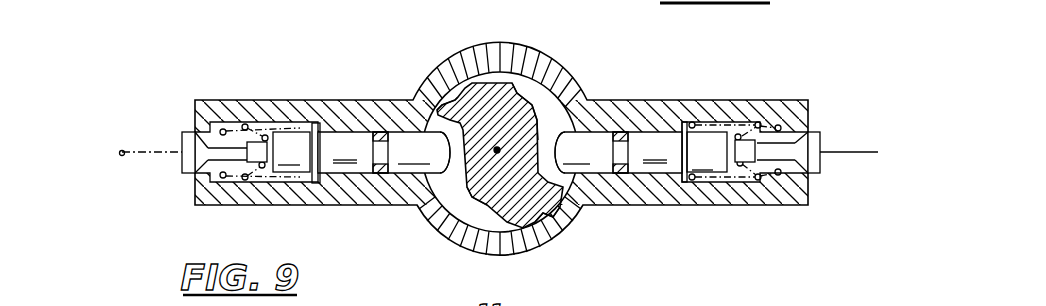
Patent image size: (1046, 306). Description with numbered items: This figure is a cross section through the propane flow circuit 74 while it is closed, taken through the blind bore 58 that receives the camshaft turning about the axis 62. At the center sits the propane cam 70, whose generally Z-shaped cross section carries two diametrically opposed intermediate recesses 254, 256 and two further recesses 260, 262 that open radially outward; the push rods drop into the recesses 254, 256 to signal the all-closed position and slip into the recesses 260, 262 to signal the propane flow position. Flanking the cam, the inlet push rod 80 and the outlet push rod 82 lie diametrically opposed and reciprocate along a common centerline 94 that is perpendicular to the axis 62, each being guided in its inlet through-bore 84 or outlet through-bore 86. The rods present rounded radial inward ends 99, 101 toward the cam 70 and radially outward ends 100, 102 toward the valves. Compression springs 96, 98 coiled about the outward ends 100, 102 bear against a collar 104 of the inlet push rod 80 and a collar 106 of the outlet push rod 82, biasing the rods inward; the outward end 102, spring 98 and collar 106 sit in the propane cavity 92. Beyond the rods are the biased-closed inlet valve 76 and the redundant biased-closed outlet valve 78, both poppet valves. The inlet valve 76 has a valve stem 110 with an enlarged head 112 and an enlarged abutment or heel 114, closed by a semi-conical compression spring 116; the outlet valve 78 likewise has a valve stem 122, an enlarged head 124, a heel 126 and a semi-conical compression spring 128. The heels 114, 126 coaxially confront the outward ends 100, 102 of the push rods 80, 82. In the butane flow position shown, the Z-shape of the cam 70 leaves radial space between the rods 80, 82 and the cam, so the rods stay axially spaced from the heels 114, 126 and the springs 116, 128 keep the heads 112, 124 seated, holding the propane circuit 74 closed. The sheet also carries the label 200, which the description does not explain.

The blind bore 58 is at (497, 150).
The axis 62 is at (499, 78).
The propane cam 70 is at (515, 93).
The propane flow circuit 74 is at (668, 73).
The inlet valve 76 is at (807, 160).
The outlet valve 78 is at (183, 131).
The inlet push rod 80 is at (618, 152).
The outlet push rod 82 is at (384, 152).
The inlet through-bore 84 is at (592, 165).
The outlet through-bore 86 is at (398, 140).
The propane cavity 92 is at (285, 125).
The centerline 94 is at (121, 150).
The compression spring 96 is at (720, 155).
The compression spring 98 is at (309, 152).
The rounded radial inward end 99 is at (568, 143).
The radially outward end 100 is at (710, 155).
The rounded radial inward end 101 is at (430, 150).
The radially outward end 102 is at (292, 127).
The collar 104 is at (693, 152).
The collar 106 is at (292, 168).
The valve stem 110 is at (780, 150).
The enlarged head 112 is at (818, 142).
The enlarged abutment 114 is at (745, 160).
The semi-conical compression spring 116 is at (772, 124).
The valve stem 122 is at (222, 152).
The enlarged head 124 is at (180, 163).
The enlarged abutment 126 is at (256, 150).
The semi-conical compression spring 128 is at (243, 170).
The valve assembly 200 is at (705, 304).
The intermediate recess 254 is at (477, 200).
The intermediate recess 256 is at (540, 100).
The recess 260 is at (548, 205).
The recess 262 is at (448, 100).